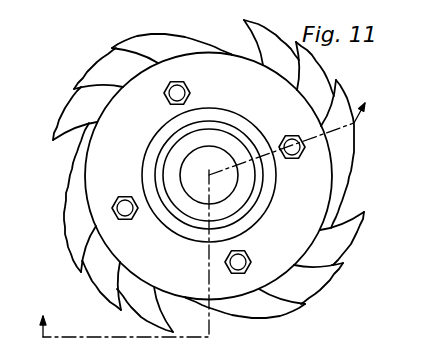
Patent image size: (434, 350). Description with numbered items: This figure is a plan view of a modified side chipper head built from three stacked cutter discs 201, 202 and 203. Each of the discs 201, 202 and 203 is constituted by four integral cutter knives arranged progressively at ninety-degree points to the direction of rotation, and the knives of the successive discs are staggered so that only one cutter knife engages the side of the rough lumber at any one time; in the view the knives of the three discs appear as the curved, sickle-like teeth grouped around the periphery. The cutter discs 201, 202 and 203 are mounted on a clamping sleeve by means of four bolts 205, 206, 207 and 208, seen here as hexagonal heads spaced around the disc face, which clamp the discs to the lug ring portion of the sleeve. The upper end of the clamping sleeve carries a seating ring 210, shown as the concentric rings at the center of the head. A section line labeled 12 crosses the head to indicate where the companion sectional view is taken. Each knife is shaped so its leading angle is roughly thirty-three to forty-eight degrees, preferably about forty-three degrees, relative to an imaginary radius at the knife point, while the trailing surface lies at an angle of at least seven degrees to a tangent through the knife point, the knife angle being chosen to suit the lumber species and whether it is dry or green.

The disc 201 is at (289, 313).
The disc 202 is at (338, 274).
The disc 203 is at (352, 232).
The bolt 205 is at (231, 268).
The bolt 206 is at (292, 158).
The bolt 207 is at (187, 93).
The bolt 208 is at (132, 218).
The seating ring 210 is at (229, 197).
The section line 12- 12 is at (202, 226).